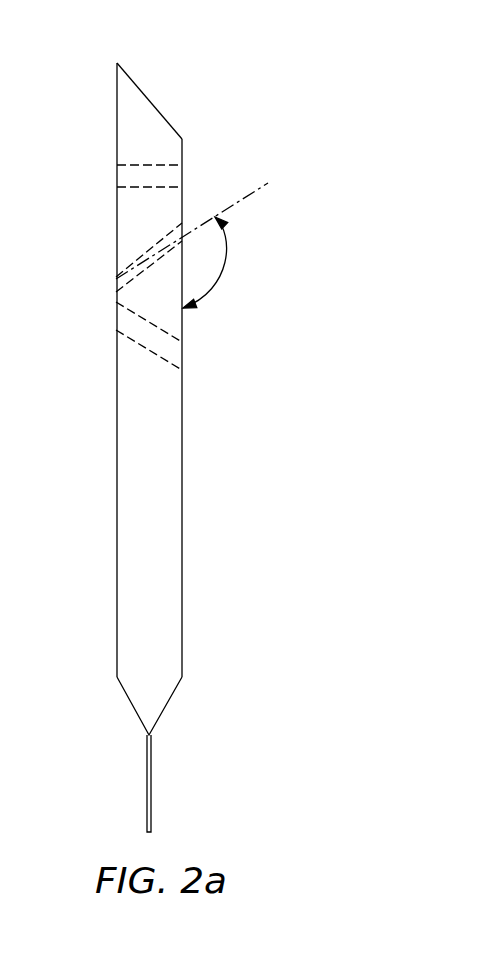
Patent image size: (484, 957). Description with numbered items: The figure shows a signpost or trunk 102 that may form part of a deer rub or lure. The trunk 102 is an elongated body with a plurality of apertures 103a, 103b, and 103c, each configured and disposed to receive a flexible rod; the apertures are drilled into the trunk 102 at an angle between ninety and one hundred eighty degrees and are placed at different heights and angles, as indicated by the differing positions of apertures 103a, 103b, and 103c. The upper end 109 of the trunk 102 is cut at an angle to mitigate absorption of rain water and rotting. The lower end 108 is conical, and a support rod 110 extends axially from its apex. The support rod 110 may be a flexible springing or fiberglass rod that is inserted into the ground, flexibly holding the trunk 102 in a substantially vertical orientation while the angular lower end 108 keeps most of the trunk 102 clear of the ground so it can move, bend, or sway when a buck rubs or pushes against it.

The trunk 102 is at (183, 522).
The lower end 108 is at (160, 692).
The upper end 109 is at (152, 103).
The support rod 110 is at (148, 780).
The aperture 103a is at (163, 348).
The aperture 103b is at (128, 269).
The aperture 103c is at (168, 177).